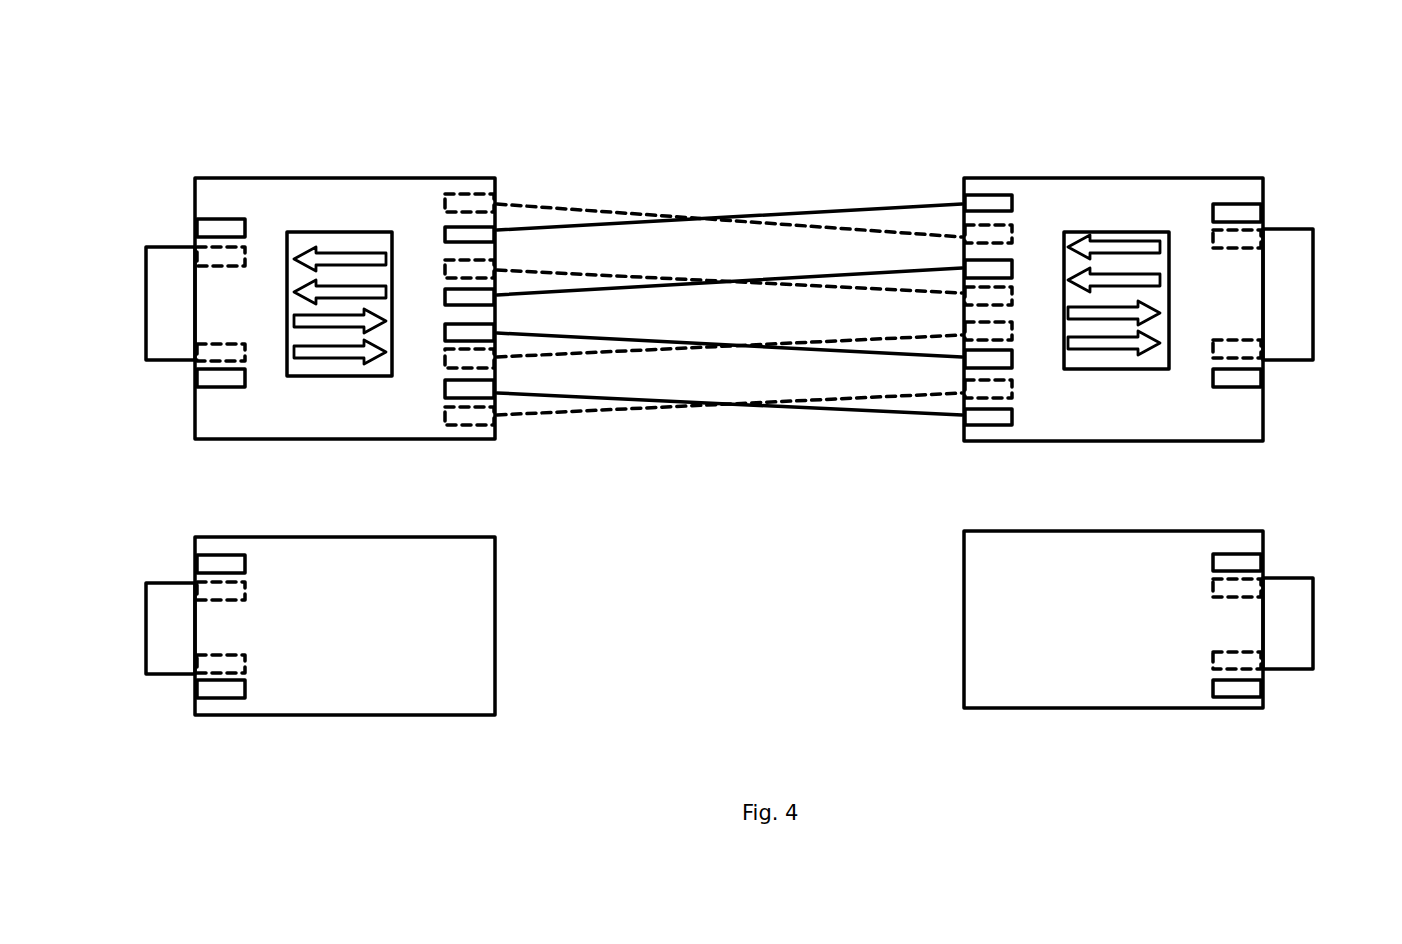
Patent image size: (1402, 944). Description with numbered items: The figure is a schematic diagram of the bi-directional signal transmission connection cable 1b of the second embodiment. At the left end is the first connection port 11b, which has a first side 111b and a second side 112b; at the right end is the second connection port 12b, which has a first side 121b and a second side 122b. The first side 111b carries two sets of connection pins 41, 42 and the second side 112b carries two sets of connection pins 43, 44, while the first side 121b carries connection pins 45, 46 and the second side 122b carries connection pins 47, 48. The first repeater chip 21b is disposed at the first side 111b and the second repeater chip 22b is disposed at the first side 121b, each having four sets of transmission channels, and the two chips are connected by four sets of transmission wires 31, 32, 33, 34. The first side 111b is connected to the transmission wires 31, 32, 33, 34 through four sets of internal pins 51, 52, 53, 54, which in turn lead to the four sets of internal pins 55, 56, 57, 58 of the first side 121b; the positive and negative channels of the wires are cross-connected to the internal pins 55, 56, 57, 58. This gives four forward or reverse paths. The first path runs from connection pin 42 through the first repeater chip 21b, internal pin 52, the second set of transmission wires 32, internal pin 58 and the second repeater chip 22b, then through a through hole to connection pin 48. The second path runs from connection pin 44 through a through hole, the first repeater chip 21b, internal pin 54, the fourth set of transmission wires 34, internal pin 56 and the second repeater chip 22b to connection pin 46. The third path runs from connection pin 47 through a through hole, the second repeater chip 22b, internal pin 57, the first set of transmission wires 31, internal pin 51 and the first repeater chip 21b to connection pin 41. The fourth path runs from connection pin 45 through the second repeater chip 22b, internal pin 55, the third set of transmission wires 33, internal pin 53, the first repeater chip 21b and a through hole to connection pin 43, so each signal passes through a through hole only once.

The bi-directional signal transmission connection cable 1b is at (103, 96).
The first connection port 11b is at (138, 443).
The first side of the first connection port 111b is at (228, 440).
The second side of the first connection port 112b is at (228, 537).
The second connection port 12b is at (1330, 443).
The first side of the second connection port 121b is at (1231, 441).
The second side of the second connection port 122b is at (1235, 532).
The first repeater chip 21b is at (366, 232).
The second repeater chip 22b is at (1120, 232).
The first set of transmission wires 31 is at (852, 275).
The second set of transmission wires 32 is at (895, 413).
The third set of transmission wires 33 is at (577, 229).
The fourth set of transmission wires 34 is at (632, 352).
The connection pin 41 is at (237, 242).
The connection pin 42 is at (237, 365).
The connection pin 43 is at (237, 577).
The connection pin 44 is at (237, 676).
The connection pin 45 is at (1220, 226).
The connection pin 46 is at (1220, 363).
The connection pin 47 is at (1220, 575).
The connection pin 48 is at (1220, 674).
The internal pin 51 is at (455, 282).
The internal pin 52 is at (455, 402).
The internal pin 53 is at (455, 218).
The internal pin 54 is at (455, 346).
The internal pin 55 is at (1007, 219).
The internal pin 56 is at (1007, 345).
The internal pin 57 is at (1007, 282).
The internal pin 58 is at (1007, 402).